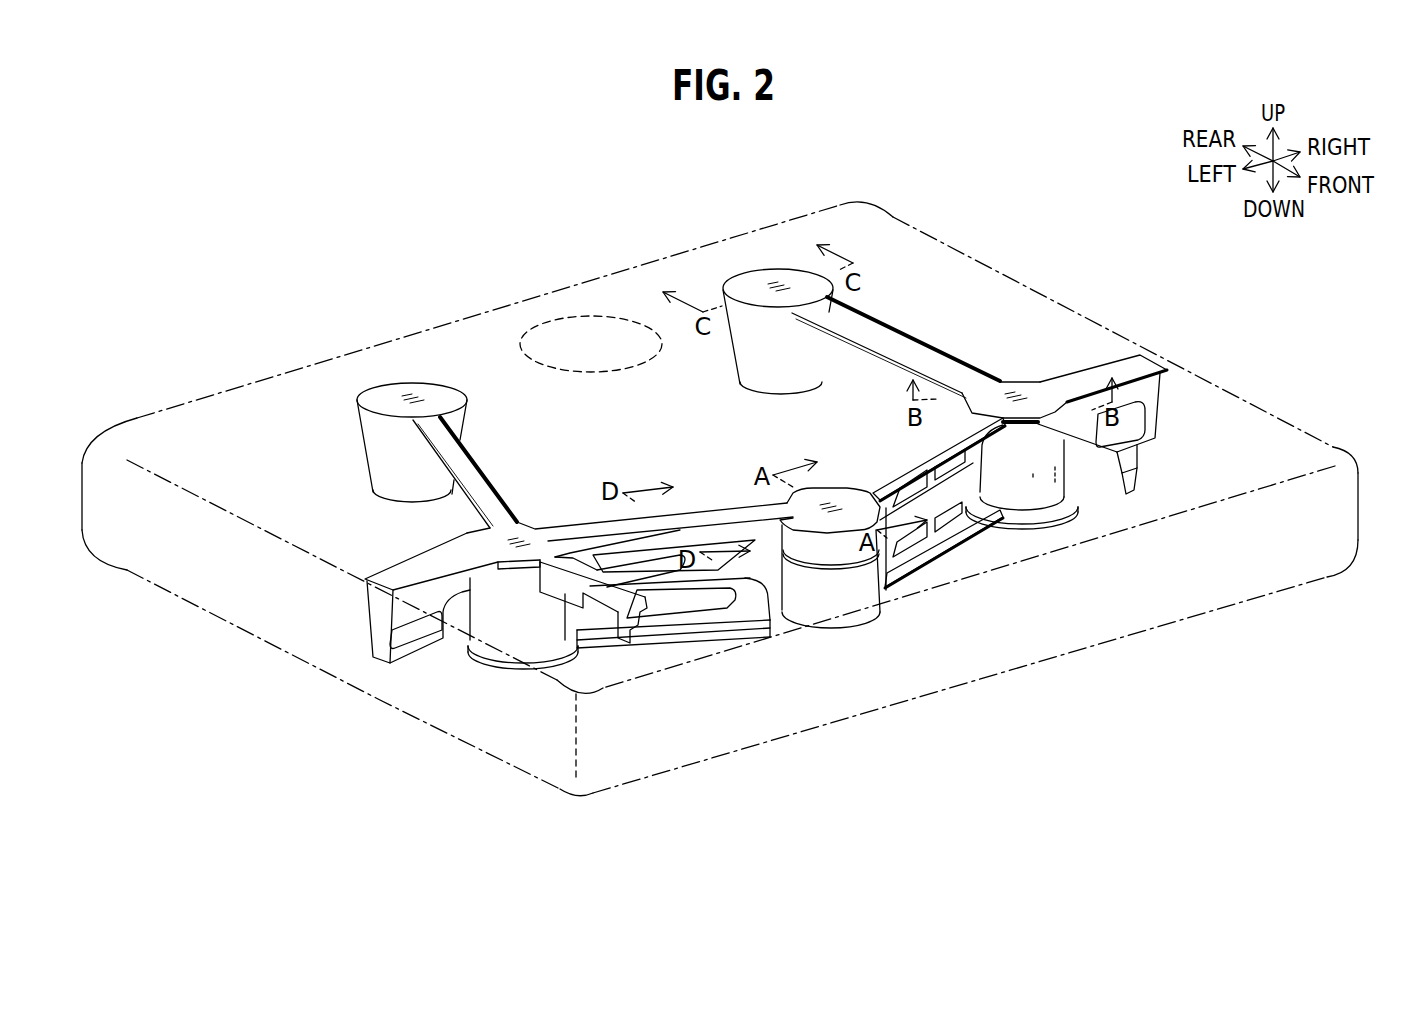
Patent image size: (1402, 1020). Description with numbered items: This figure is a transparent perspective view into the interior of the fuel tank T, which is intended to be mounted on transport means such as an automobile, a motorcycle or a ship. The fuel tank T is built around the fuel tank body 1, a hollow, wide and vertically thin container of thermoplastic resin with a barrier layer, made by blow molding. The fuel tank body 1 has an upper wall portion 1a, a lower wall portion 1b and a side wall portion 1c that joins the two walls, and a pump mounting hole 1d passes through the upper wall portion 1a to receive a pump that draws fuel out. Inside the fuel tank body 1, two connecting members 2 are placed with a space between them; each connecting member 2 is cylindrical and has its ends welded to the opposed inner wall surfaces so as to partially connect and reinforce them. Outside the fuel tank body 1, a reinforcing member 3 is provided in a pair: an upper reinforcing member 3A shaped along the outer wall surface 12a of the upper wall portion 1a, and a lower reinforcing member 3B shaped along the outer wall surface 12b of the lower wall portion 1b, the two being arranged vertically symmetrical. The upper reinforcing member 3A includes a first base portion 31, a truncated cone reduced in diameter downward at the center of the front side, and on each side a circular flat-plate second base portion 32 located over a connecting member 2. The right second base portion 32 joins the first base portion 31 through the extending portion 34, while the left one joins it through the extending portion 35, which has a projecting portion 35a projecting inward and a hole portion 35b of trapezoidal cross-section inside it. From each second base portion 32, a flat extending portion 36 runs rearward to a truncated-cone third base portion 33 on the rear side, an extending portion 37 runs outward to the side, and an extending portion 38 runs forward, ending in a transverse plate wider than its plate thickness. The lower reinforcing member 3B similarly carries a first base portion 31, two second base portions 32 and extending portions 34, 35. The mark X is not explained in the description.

The fuel tank body 1 is at (720, 497).
The upper wall portion 1a is at (720, 448).
The lower wall portion 1b is at (692, 767).
The side wall portion 1c is at (193, 560).
The pump mounting hole 1d is at (599, 318).
The outer wall surface of the upper wall portion 12a is at (969, 577).
The outer wall surface of the lower wall portion 12b is at (965, 683).
The connecting member 2 is at (1045, 493).
The reinforcing member 3 is at (777, 473).
The upper reinforcing member 3A is at (940, 367).
The lower reinforcing member 3B is at (912, 583).
The first base portion 31 is at (832, 497).
The second base portion 32 is at (1015, 385).
The third base portion 33 is at (410, 388).
The extending portion 34 is at (882, 483).
The extending portion 35 is at (680, 581).
The projecting portion 35a is at (772, 627).
The hole portion 35b is at (682, 610).
The extending portion 36 is at (472, 483).
The extending portion 37 is at (1100, 374).
The extending portion 38 is at (1140, 476).
The fuel tank T is at (657, 212).
The device X is at (1142, 318).